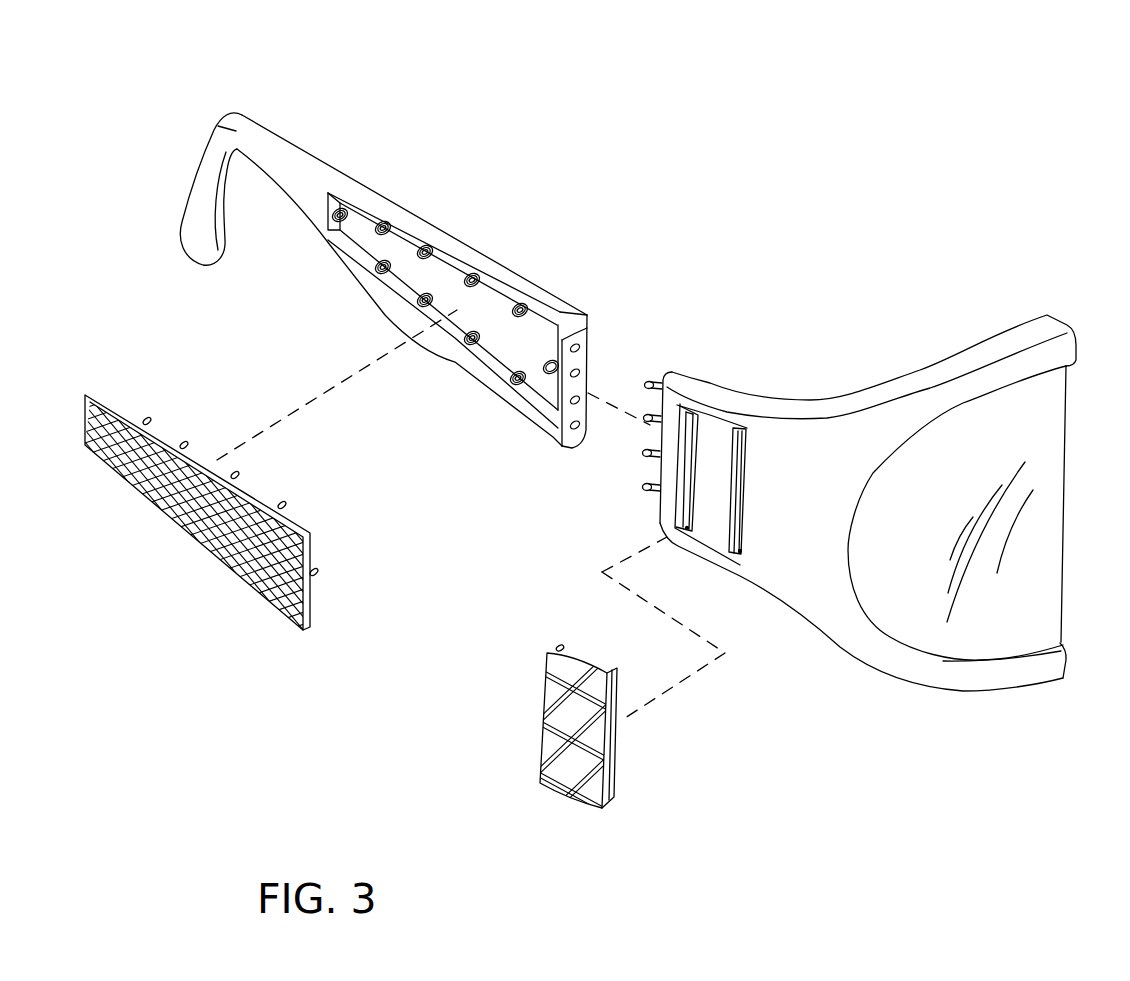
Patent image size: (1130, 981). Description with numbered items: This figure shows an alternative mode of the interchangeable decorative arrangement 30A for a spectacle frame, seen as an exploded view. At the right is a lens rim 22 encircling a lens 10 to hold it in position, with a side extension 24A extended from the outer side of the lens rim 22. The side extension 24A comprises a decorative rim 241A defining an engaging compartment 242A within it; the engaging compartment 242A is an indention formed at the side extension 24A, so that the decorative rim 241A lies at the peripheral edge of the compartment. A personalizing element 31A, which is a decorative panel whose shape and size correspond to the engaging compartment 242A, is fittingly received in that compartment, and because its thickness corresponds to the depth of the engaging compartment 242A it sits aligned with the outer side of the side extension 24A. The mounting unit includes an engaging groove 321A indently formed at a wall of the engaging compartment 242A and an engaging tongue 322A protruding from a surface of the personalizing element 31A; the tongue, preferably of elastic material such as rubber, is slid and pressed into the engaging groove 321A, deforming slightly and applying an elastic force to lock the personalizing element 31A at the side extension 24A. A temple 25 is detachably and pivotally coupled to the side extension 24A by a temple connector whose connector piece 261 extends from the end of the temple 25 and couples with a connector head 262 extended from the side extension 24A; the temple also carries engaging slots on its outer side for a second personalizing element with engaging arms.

The lens 10 is at (1043, 603).
The lens rim 22 is at (1031, 328).
The side extension 24A is at (808, 582).
The decorative rim 241A is at (686, 418).
The engaging compartment 242A is at (712, 450).
The temple 25 is at (291, 152).
The connector piece 261 is at (568, 410).
The connector head 262 is at (647, 458).
The engaging groove 321A is at (688, 535).
The engaging tongue 322A is at (603, 670).
The personalizing element 31A is at (550, 770).
The interchangeable decorative arrangement 30A is at (290, 734).